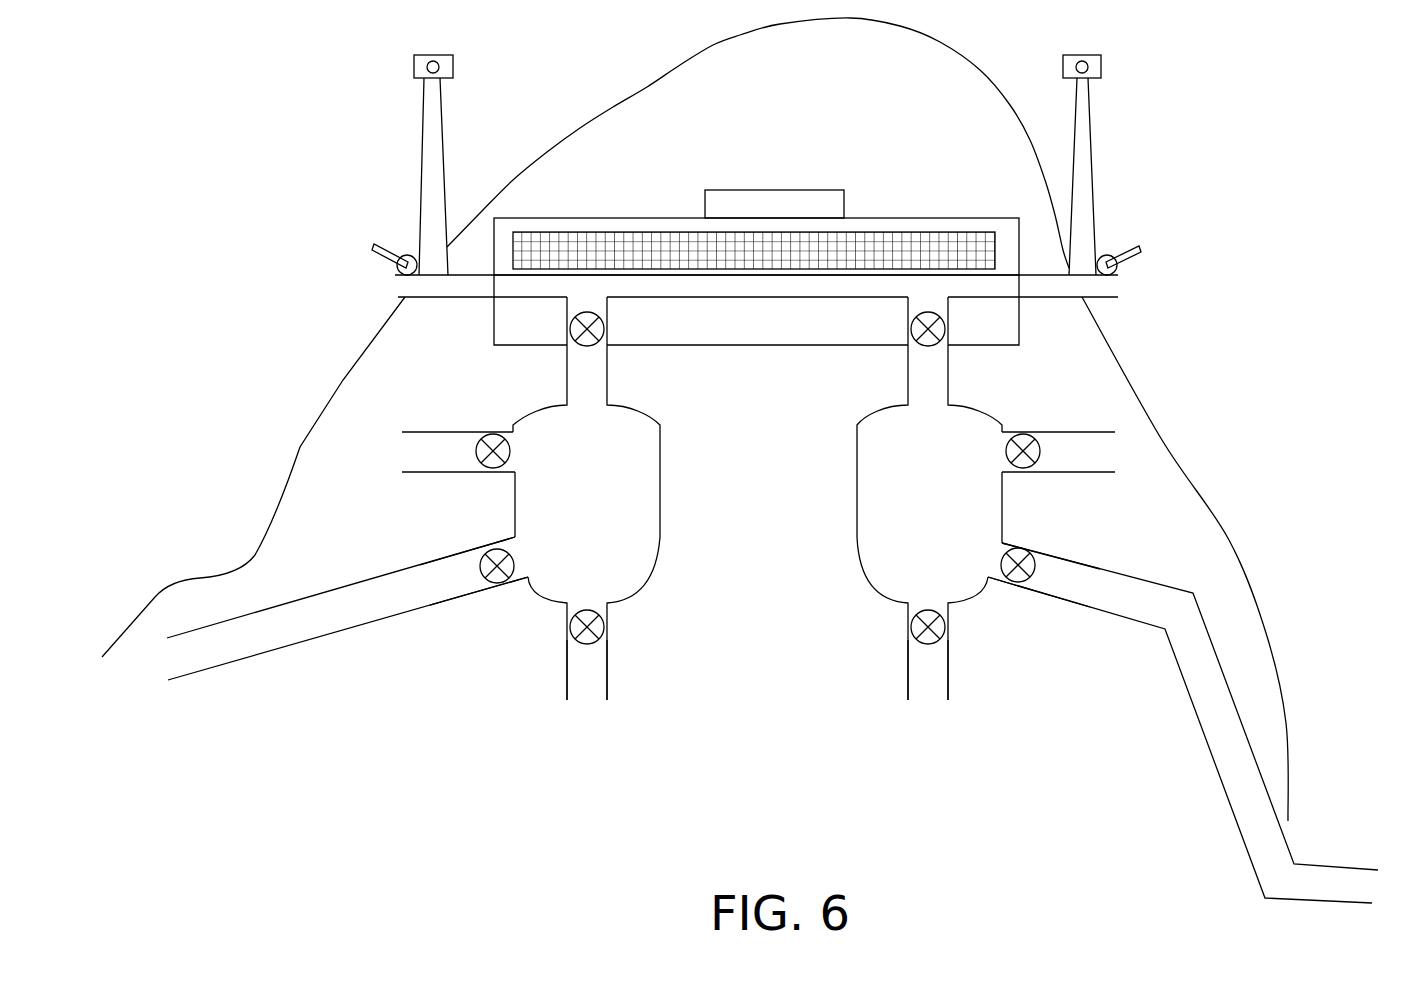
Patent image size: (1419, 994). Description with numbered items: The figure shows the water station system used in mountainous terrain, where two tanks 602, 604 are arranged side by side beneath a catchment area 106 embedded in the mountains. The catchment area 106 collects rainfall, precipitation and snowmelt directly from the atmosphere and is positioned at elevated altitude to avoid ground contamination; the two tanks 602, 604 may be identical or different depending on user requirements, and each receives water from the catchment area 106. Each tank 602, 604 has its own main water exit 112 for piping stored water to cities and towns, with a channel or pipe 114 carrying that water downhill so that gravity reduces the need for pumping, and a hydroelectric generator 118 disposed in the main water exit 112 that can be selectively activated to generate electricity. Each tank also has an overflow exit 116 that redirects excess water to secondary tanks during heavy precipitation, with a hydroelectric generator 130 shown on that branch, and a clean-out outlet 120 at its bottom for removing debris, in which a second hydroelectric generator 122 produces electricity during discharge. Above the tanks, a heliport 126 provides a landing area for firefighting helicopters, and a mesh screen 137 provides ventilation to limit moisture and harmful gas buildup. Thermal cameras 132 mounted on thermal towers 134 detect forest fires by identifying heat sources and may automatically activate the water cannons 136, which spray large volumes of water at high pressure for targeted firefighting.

The catchment area 106 is at (941, 143).
The main water exit 112 is at (475, 572).
The channel and/or pipe 114 is at (290, 632).
The overflow exit 116 is at (448, 462).
The hydroelectric generator 118 is at (497, 583).
The clean-out outlet 120 is at (583, 662).
The second hydroelectric generator 122 is at (598, 627).
The heliport 126 is at (743, 197).
The hydroelectric generator 130 is at (493, 460).
The thermal cameras 132 is at (1101, 64).
The thermal towers 134 is at (1078, 165).
The water cannons 136 is at (1117, 266).
The screen 137 is at (782, 262).
The tank 602 is at (605, 495).
The tank 604 is at (954, 495).